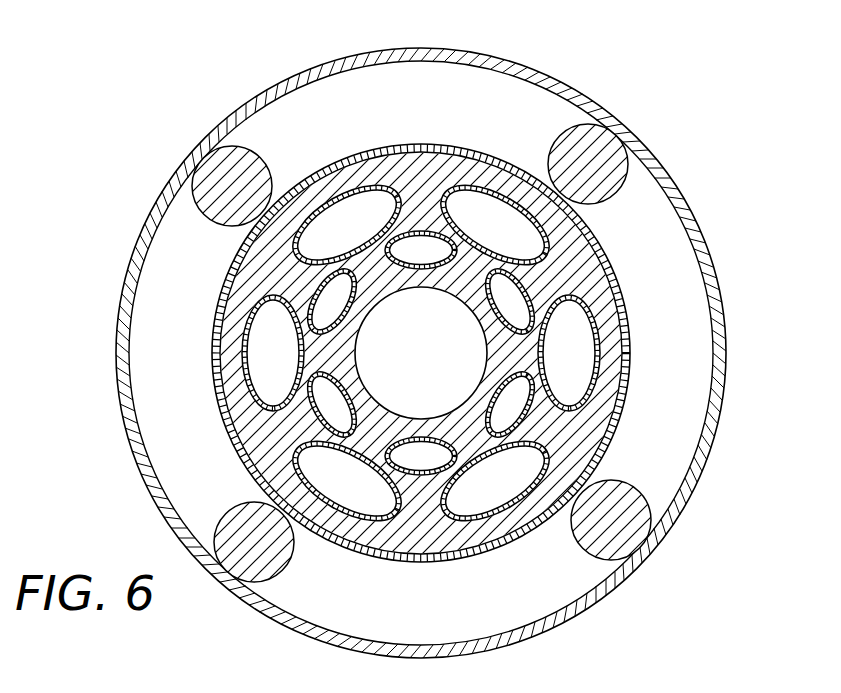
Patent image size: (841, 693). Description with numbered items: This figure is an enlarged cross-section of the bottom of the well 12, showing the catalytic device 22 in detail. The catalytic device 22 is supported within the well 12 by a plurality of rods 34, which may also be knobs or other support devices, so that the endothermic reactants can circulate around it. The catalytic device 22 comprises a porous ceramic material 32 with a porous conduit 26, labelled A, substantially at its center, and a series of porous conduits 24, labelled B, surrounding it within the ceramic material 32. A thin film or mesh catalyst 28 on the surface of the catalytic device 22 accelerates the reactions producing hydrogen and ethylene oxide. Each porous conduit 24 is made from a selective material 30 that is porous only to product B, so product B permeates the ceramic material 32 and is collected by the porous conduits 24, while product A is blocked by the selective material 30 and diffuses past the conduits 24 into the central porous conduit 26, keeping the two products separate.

The well 12 is at (577, 90).
The catalytic device 22 is at (502, 291).
The porous conduits 24 is at (523, 238).
The porous conduit 26 is at (460, 347).
The thin film or mesh catalyst 28 is at (620, 423).
The selective material 30 is at (605, 356).
The porous ceramic material 32 is at (603, 405).
The rods 34 is at (632, 515).